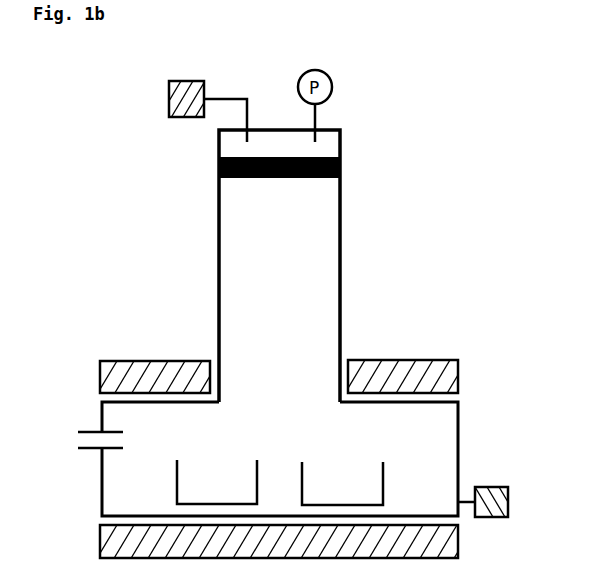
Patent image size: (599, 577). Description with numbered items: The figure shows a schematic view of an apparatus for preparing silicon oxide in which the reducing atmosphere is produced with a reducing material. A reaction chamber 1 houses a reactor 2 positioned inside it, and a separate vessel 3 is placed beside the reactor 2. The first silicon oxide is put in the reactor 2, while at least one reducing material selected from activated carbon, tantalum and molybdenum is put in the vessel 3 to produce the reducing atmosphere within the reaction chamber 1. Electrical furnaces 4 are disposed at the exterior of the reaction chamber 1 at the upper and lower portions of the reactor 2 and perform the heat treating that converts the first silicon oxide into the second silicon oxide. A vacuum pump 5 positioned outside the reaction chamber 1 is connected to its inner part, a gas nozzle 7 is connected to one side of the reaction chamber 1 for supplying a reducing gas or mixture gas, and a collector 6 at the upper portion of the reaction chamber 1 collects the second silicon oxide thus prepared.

The reaction chamber 1 is at (335, 265).
The reactor 2 is at (176, 480).
The vessel 3 is at (383, 480).
The electrical furnaces 4 is at (455, 373).
The vacuum pump 5 is at (169, 96).
The collector 6 is at (340, 167).
The gas nozzle 7 is at (78, 438).